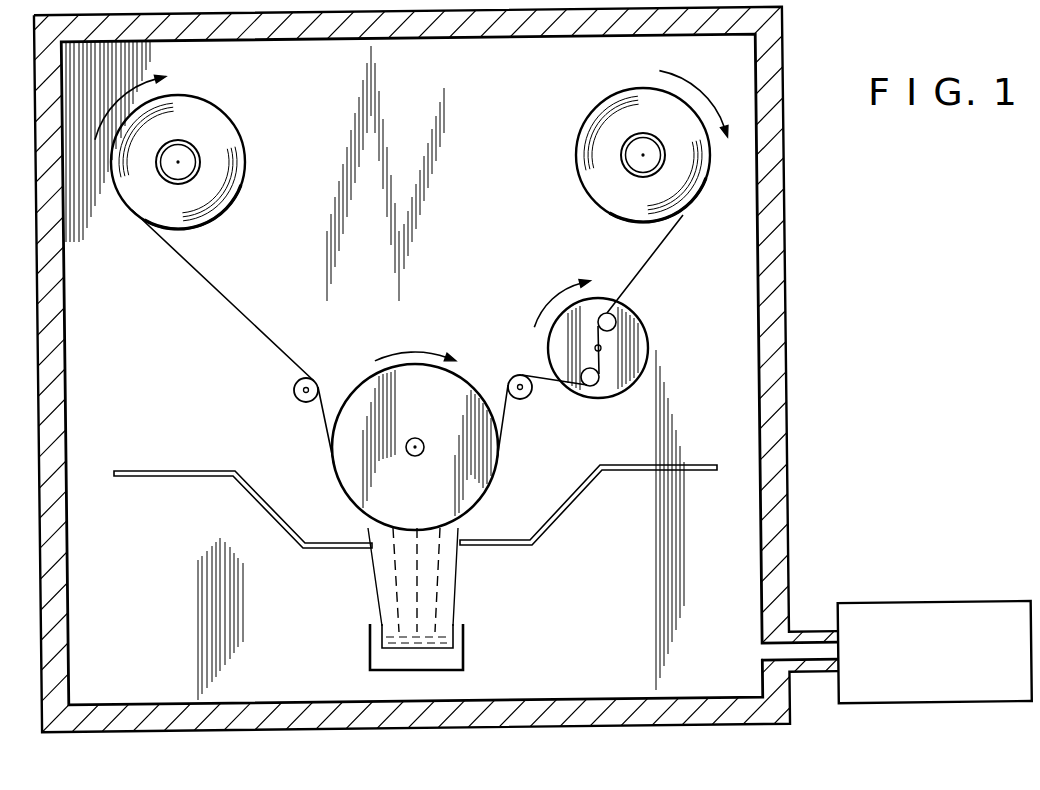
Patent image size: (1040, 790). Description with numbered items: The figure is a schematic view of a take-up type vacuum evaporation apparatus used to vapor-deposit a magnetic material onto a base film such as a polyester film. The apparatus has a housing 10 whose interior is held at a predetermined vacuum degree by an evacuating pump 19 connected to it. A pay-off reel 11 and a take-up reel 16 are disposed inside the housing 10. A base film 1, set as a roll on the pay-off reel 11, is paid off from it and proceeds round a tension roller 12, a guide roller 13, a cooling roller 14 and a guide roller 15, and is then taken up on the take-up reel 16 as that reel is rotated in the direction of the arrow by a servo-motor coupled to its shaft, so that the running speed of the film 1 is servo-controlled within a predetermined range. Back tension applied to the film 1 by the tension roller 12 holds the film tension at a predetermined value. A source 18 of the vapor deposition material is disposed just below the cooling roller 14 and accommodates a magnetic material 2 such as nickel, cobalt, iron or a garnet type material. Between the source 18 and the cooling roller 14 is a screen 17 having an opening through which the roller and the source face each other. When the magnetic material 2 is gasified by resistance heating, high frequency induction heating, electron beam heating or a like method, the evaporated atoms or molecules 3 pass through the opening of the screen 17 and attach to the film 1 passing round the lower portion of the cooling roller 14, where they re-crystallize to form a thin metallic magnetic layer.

The base film 1 is at (644, 264).
The magnetic material 2 is at (425, 632).
The evaporated atoms (or molecules) 3 is at (360, 584).
The housing 10 is at (777, 344).
The pay-off reel 11 is at (637, 162).
The tension roller 12 is at (650, 345).
The guide roller 13 is at (530, 398).
The cooling roller 14 is at (458, 381).
The guide roller 15 is at (294, 390).
The take-up reel 16 is at (187, 160).
The screen 17 is at (268, 519).
The vapor deposition material source 18 is at (455, 656).
The evacuating pump 19 is at (912, 608).